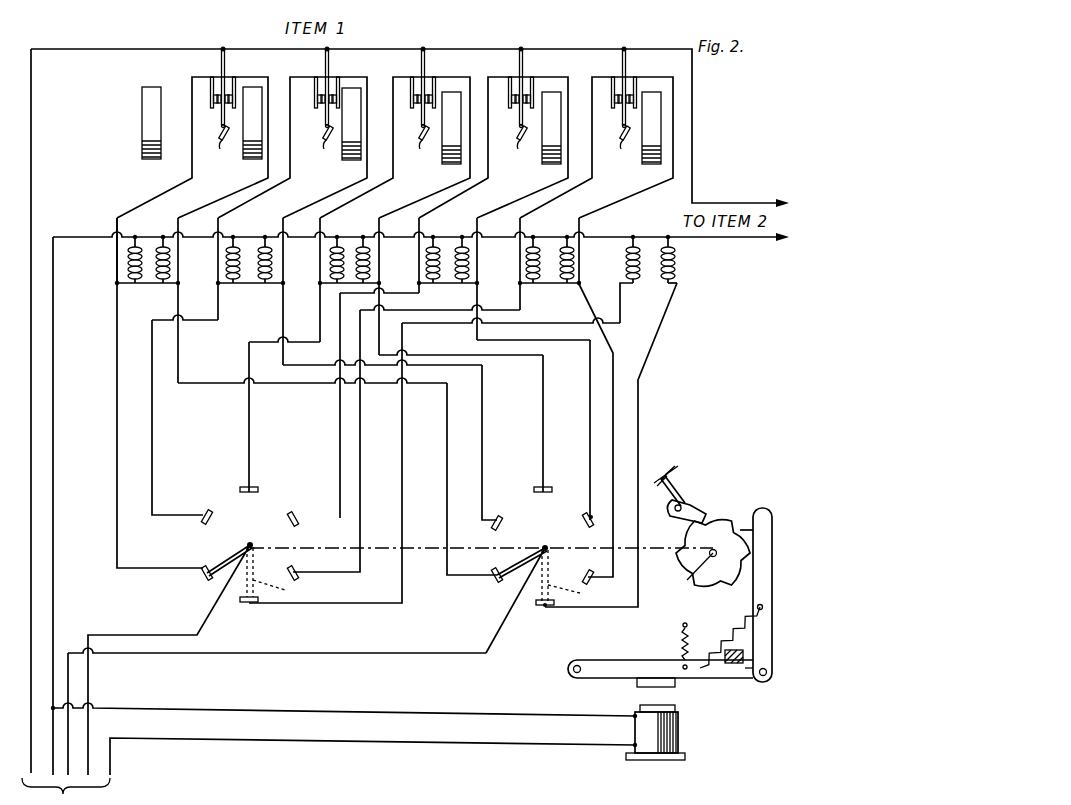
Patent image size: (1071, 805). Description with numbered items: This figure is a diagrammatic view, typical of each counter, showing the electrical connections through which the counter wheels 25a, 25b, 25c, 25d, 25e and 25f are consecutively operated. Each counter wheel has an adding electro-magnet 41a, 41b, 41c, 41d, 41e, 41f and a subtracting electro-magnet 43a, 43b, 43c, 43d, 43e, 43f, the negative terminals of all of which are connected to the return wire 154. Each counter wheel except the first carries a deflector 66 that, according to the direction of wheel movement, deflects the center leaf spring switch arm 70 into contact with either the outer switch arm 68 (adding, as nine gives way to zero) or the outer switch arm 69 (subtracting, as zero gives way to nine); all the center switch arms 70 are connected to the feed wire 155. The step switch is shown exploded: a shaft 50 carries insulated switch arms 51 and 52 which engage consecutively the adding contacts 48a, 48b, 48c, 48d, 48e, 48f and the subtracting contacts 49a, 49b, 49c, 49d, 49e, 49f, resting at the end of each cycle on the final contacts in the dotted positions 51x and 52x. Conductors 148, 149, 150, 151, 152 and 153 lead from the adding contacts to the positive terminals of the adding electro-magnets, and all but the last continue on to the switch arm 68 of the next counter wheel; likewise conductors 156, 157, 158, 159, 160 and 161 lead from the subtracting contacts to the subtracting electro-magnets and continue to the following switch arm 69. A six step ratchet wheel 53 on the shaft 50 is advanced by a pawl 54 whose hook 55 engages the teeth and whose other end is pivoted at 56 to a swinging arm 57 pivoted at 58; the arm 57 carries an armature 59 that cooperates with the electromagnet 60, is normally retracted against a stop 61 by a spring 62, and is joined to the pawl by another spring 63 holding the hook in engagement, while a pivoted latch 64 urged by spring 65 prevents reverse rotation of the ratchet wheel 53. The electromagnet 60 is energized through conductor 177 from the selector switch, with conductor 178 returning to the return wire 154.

The feed wire 155 is at (33, 141).
The return wire 154 is at (55, 374).
The counter wheel 25a is at (140, 158).
The counter wheel 25b is at (248, 160).
The counter wheel 25c is at (350, 162).
The counter wheel 25d is at (452, 165).
The counter wheel 25e is at (548, 165).
The counter wheel 25f is at (650, 165).
The leaf spring switch arm 68 is at (204, 86).
The leaf spring switch arm 69 is at (238, 82).
The center switch arm 70 is at (220, 116).
The deflector 66 is at (222, 142).
The adding electro-magnet 41a is at (127, 280).
The adding electro-magnet 41b is at (246, 281).
The adding electro-magnet 41c is at (328, 278).
The adding electro-magnet 41d is at (426, 268).
The adding electro-magnet 41e is at (526, 270).
The adding electro-magnet 41f is at (626, 268).
The subtracting electro-magnet 43a is at (169, 276).
The subtracting electro-magnet 43b is at (266, 240).
The subtracting electro-magnet 43c is at (362, 240).
The subtracting electro-magnet 43d is at (463, 240).
The subtracting electro-magnet 43e is at (561, 242).
The subtracting electro-magnet 43f is at (676, 266).
The conductor 148 is at (115, 433).
The conductor 149 is at (153, 442).
The conductor 150 is at (248, 441).
The conductor 151 is at (338, 420).
The conductor 152 is at (359, 462).
The conductor 153 is at (403, 416).
The conductor 156 is at (446, 490).
The conductor 157 is at (483, 423).
The conductor 158 is at (544, 437).
The conductor 159 is at (589, 422).
The conductor 160 is at (614, 426).
The conductor 161 is at (639, 401).
The adding contact 48a is at (203, 568).
The adding contact 48b is at (205, 512).
The adding contact 48c is at (255, 488).
The adding contact 48d is at (298, 510).
The adding contact 48e is at (300, 568).
The adding contact 48f is at (250, 606).
The subtracting contact 49a is at (493, 573).
The subtracting contact 49b is at (500, 515).
The subtracting contact 49c is at (548, 488).
The subtracting contact 49d is at (583, 520).
The subtracting contact 49e is at (586, 576).
The subtracting contact 49f is at (543, 610).
The switch arm 51 is at (228, 550).
The switch arm rest position 51x is at (281, 575).
The switch arm 52 is at (502, 585).
The switch arm rest position 52x is at (577, 576).
The shaft 50 is at (432, 560).
The ratchet wheel 53 is at (722, 518).
The pivoted latch 64 is at (672, 516).
The spring 65 is at (670, 478).
The hook 55 is at (756, 512).
The pawl 54 is at (752, 600).
The swinging arm 57 is at (722, 678).
The pivot 58 is at (578, 664).
The armature 59 is at (646, 678).
The spring 62 is at (682, 637).
The spring 63 is at (727, 650).
The stop 61 is at (745, 668).
The pivot 56 is at (765, 678).
The electromagnet 60 is at (680, 736).
The conductor 178 is at (462, 703).
The conductor 177 is at (478, 746).